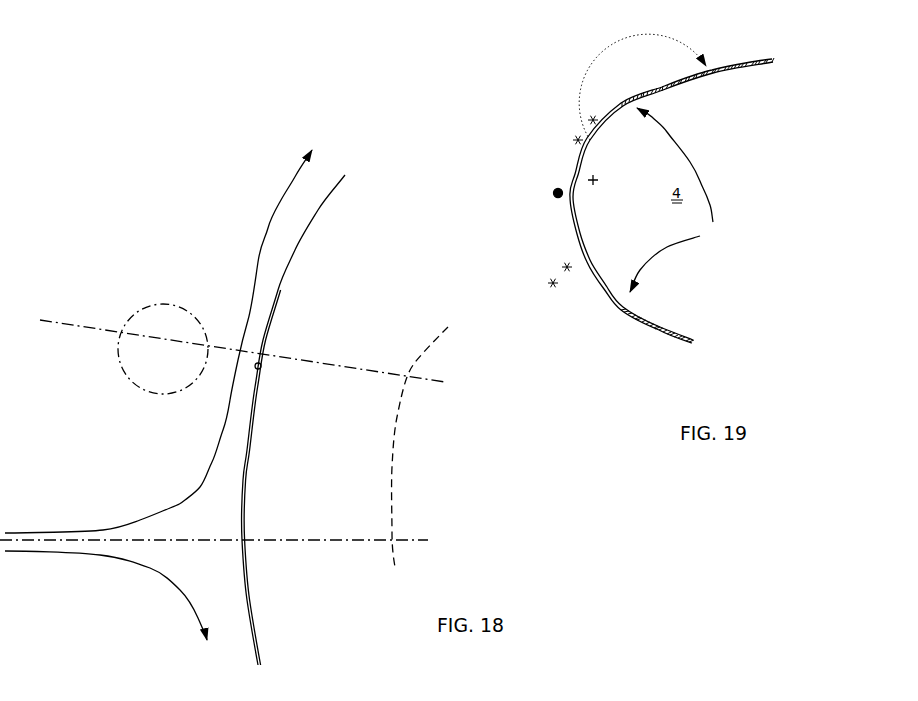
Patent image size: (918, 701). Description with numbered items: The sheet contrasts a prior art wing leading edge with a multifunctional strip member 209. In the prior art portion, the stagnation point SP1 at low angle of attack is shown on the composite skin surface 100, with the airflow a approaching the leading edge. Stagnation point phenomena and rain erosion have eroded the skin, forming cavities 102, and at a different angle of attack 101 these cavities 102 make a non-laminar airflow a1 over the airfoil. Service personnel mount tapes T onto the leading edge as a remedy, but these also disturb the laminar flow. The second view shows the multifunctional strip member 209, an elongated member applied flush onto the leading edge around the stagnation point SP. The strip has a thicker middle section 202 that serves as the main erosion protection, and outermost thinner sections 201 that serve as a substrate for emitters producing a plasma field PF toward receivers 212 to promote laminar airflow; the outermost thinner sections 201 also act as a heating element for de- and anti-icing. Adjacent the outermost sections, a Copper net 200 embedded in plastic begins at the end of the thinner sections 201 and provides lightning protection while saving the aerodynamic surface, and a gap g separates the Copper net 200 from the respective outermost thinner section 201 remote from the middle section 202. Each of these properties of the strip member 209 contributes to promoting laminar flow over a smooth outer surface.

In FIG. 18, the stagnation point SP1 is at (105, 325).
In FIG. 18, the non-laminar airflow a1 is at (253, 273).
In FIG. 18, the airflow a is at (35, 520).
In FIG. 18, the composite skin surface 100 is at (289, 484).
In FIG. 18, the angle of attack 101 is at (395, 418).
In FIG. 18, the cavities 102 is at (258, 367).
In FIG. 18, the tapes T is at (248, 428).
In FIG. 19, the plasma field PF is at (617, 93).
In FIG. 19, the multifunctional strip member 209 is at (577, 174).
In FIG. 19, the outermost thinner sections 201 is at (593, 271).
In FIG. 19, the Copper net 200 is at (658, 92).
In FIG. 19, the receivers 212 is at (731, 70).
In FIG. 19, the middle section 202 is at (583, 213).
In FIG. 19, the stagnation point SP is at (549, 203).
In FIG. 19, the gap g is at (672, 200).